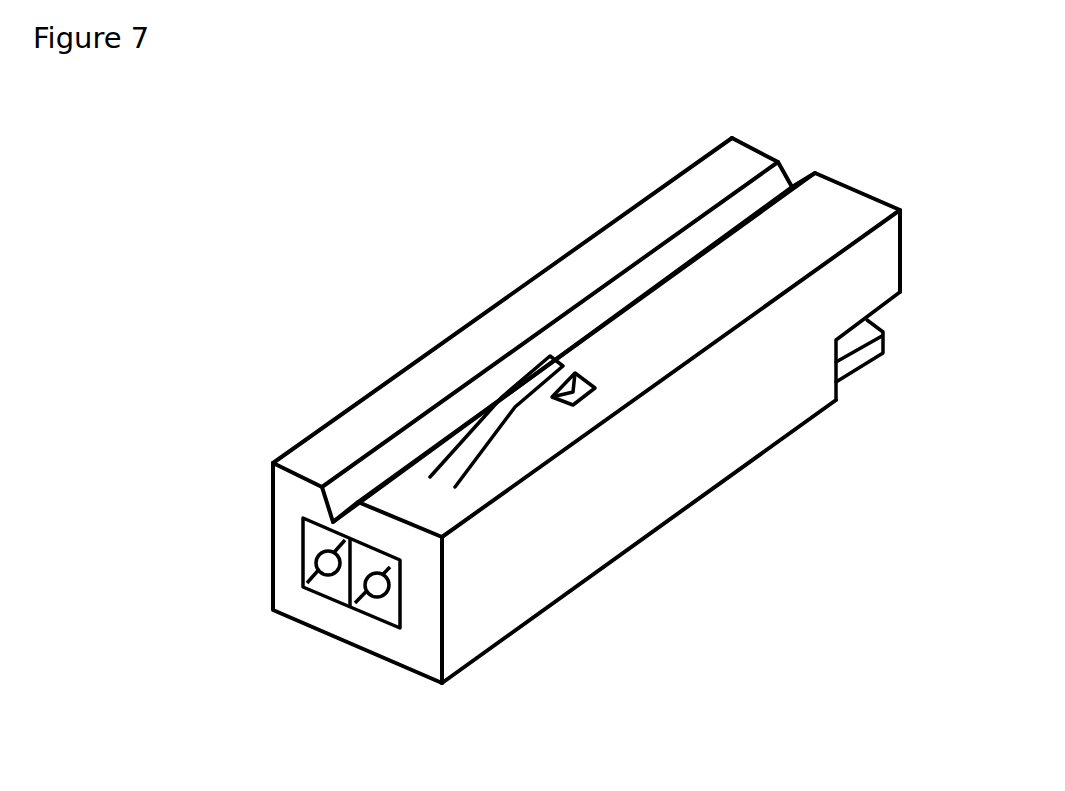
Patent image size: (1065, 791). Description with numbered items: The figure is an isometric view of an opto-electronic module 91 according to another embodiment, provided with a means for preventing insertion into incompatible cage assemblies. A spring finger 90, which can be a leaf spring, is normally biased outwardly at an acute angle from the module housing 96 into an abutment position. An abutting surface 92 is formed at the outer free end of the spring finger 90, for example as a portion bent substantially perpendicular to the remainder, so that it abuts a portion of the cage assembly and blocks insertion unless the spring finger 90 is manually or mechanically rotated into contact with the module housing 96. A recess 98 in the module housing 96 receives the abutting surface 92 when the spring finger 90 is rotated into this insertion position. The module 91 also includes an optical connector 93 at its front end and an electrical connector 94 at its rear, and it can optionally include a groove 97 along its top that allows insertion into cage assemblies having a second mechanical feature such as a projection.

The spring finger 90 is at (510, 423).
The opto-electronic module 91 is at (403, 369).
The abutting surface 92 is at (580, 371).
The optical connector 93 is at (333, 592).
The electrical connector 94 is at (883, 345).
The module housing 96 is at (775, 383).
The groove 97 is at (771, 182).
The recess 98 is at (573, 403).